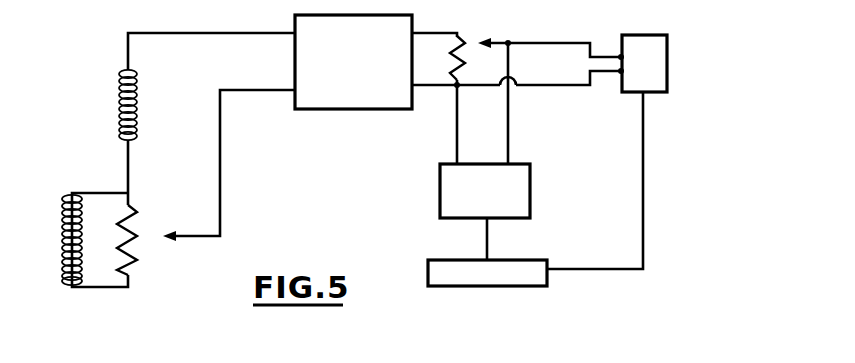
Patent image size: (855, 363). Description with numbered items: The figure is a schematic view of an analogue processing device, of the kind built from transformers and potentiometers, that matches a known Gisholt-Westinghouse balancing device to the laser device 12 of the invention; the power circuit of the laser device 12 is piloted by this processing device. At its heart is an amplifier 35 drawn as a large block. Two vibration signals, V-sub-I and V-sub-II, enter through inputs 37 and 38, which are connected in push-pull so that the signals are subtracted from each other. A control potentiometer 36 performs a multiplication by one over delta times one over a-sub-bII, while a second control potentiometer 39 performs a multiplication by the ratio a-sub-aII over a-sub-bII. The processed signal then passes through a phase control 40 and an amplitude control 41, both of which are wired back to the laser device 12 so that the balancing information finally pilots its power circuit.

The laser device 12 is at (495, 275).
The amplifier 35 is at (362, 97).
The control potentiometer 36 is at (474, 46).
The input 37 is at (110, 105).
The input 38 is at (53, 240).
The control potentiometer 39 is at (145, 240).
The phase control 40 is at (445, 188).
The amplitude control 41 is at (658, 67).